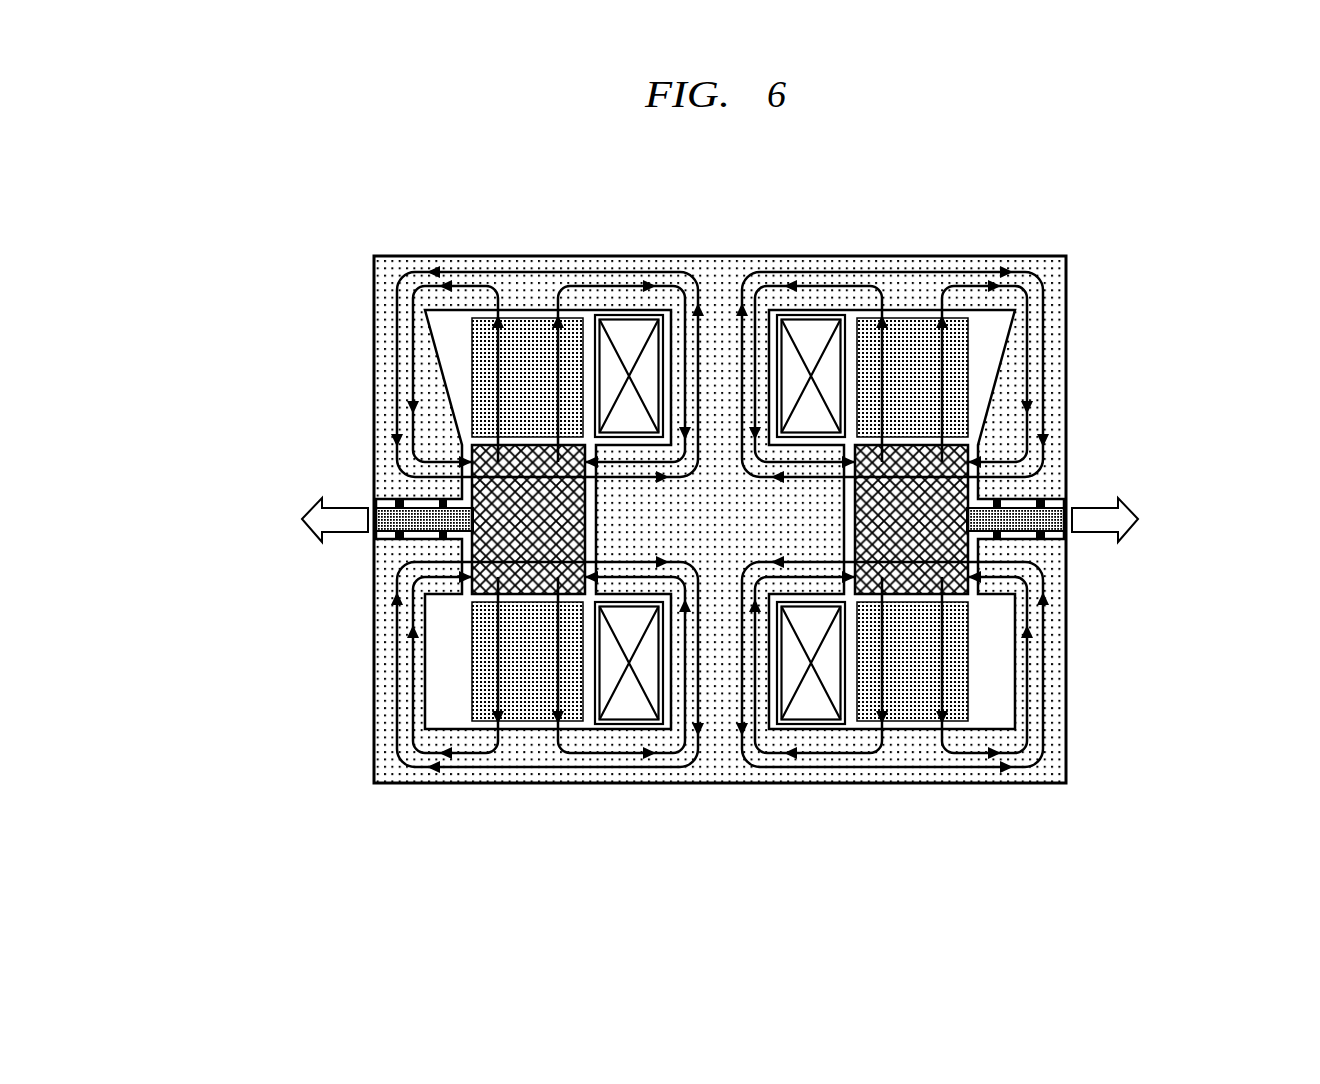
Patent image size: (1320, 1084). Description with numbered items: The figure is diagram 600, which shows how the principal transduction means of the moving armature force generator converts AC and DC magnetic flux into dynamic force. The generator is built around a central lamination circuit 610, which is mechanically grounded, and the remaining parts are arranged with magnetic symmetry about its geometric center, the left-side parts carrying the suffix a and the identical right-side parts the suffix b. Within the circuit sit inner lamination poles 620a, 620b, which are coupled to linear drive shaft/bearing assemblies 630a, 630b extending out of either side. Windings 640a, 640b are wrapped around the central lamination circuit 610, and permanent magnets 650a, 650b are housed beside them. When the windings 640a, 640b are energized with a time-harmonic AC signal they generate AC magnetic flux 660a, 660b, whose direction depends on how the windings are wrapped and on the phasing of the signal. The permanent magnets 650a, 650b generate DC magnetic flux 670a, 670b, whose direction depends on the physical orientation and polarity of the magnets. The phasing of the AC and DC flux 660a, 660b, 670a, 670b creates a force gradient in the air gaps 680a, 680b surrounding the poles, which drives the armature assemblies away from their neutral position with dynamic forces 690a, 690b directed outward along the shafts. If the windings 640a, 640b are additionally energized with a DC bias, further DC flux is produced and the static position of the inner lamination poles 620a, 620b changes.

The diagram 600 is at (741, 151).
The central lamination circuit 610 is at (720, 757).
The inner lamination pole 620a is at (444, 519).
The inner lamination pole 620b is at (996, 519).
The linear drive shaft/bearing assembly 630a is at (388, 497).
The linear drive shaft/bearing assembly 630b is at (1052, 497).
The winding 640a is at (629, 462).
The winding 640b is at (811, 462).
The permanent magnet 650a is at (443, 519).
The permanent magnet 650b is at (997, 519).
The AC magnetic flux 660a is at (549, 522).
The AC magnetic flux 660b is at (891, 522).
The DC magnetic flux 670a is at (547, 504).
The DC magnetic flux 670b is at (892, 504).
The air gap 680a is at (487, 519).
The air gap 680b is at (953, 519).
The dynamic force 690a is at (265, 510).
The dynamic force 690b is at (1173, 510).